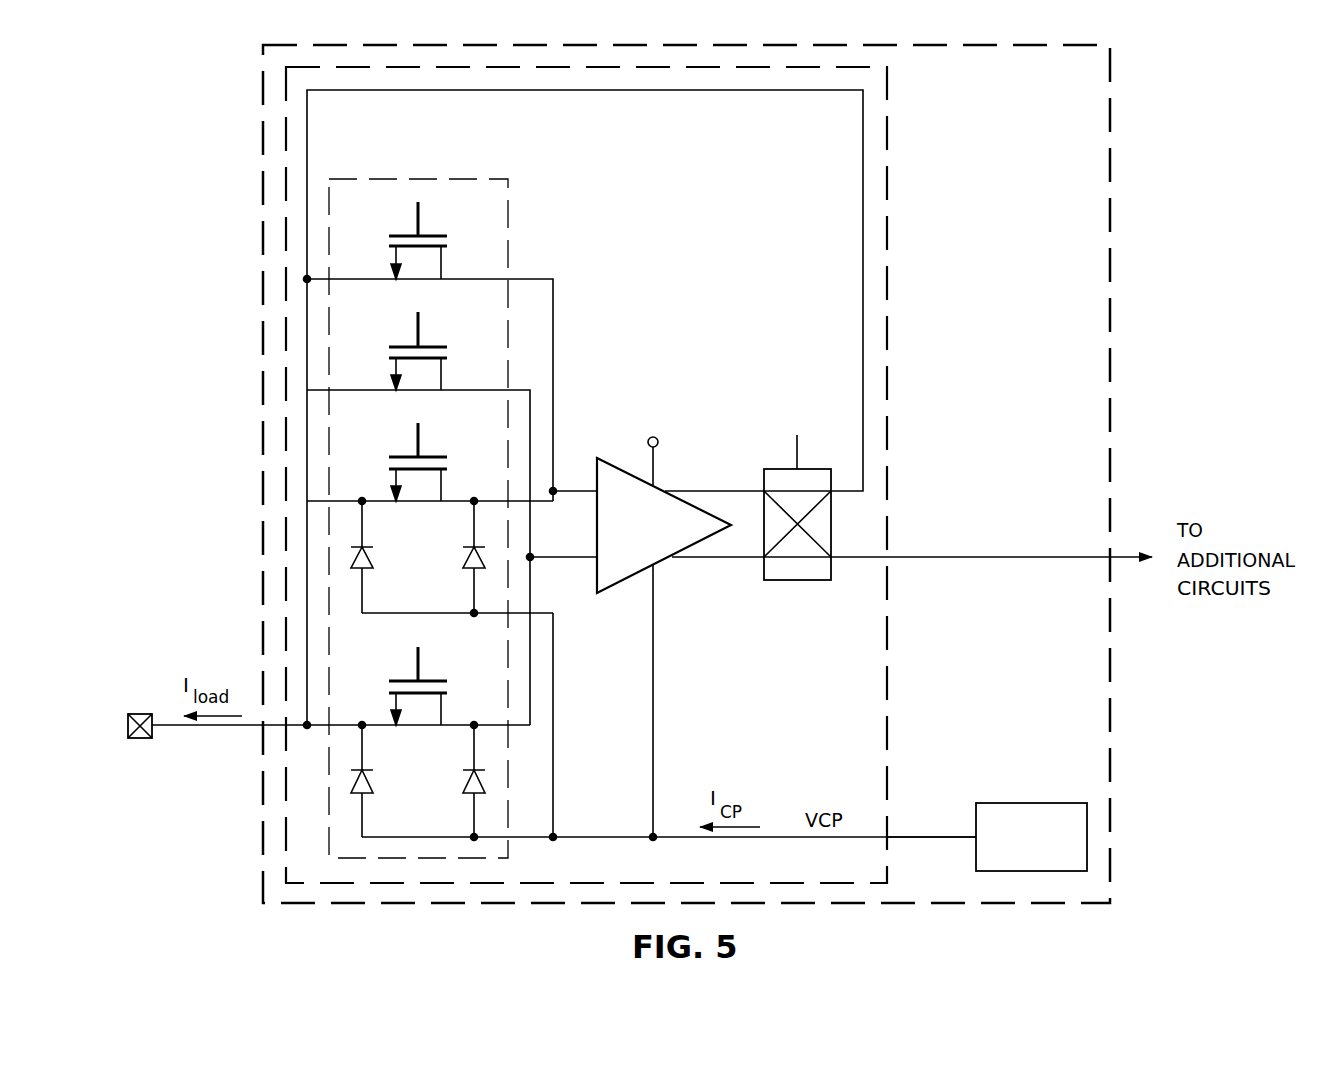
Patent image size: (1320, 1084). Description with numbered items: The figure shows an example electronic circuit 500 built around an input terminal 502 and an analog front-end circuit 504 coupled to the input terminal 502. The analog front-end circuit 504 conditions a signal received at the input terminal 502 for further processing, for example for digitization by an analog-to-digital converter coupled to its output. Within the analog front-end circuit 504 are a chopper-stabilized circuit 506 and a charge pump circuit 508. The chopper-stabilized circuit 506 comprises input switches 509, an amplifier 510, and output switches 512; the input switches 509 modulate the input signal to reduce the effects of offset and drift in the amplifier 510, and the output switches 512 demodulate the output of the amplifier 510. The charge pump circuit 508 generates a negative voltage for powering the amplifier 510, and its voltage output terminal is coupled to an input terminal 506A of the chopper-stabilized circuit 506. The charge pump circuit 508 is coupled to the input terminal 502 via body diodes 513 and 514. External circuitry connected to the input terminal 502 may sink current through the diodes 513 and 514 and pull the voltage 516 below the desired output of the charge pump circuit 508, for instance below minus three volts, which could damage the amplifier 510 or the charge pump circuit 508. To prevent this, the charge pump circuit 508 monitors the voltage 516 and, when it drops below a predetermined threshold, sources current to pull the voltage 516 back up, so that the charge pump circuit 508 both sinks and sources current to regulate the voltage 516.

The electronic circuit 500 is at (1238, 128).
The input terminal 502 is at (138, 739).
The analog front-end circuit 504 is at (1118, 258).
The chopper-stabilized circuit 506 is at (895, 338).
The input terminal of the chopper circuit 506A is at (898, 835).
The charge pump circuit 508 is at (1031, 802).
The input switches 509 is at (388, 176).
The amplifier 510 is at (668, 537).
The output switches 512 is at (798, 582).
The body diodes 513 is at (371, 780).
The body diodes 514 is at (371, 556).
The voltage 516 is at (612, 834).